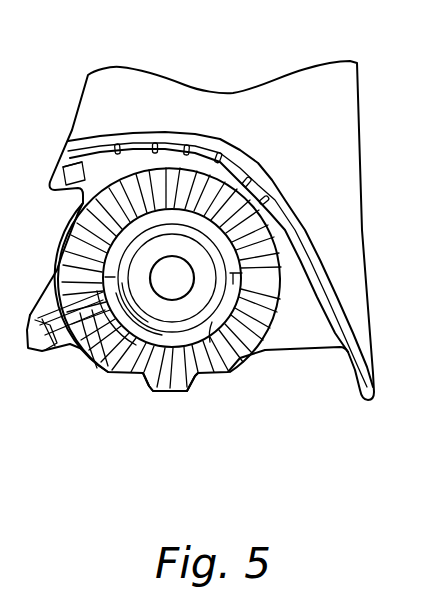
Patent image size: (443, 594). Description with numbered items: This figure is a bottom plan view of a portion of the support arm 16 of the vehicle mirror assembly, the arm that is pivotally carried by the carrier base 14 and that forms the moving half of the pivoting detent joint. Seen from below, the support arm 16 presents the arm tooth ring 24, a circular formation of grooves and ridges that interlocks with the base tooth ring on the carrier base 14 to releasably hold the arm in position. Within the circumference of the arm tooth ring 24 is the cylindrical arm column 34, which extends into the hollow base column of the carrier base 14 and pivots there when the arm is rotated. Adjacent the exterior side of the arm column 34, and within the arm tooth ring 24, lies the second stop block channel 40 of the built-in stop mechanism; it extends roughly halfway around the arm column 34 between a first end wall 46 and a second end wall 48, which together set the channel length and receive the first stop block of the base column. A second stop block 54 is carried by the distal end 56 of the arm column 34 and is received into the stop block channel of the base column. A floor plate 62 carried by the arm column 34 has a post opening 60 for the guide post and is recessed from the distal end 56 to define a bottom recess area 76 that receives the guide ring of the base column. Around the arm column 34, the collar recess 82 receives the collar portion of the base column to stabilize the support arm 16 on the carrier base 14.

The support arm 16 is at (335, 92).
The collar recess 82 is at (264, 194).
The arm tooth ring 24 is at (243, 352).
The second stop block channel 40 is at (222, 366).
The second end wall 48 is at (238, 270).
The floor plate 62 is at (202, 287).
The bottom recess area 76 is at (147, 260).
The post opening 60 is at (173, 278).
The cylindrical arm column 34 is at (147, 374).
The second stop block 54 is at (97, 366).
The distal end 56 is at (76, 348).
The first end wall 46 is at (36, 320).
The carrier base 14 is at (41, 204).